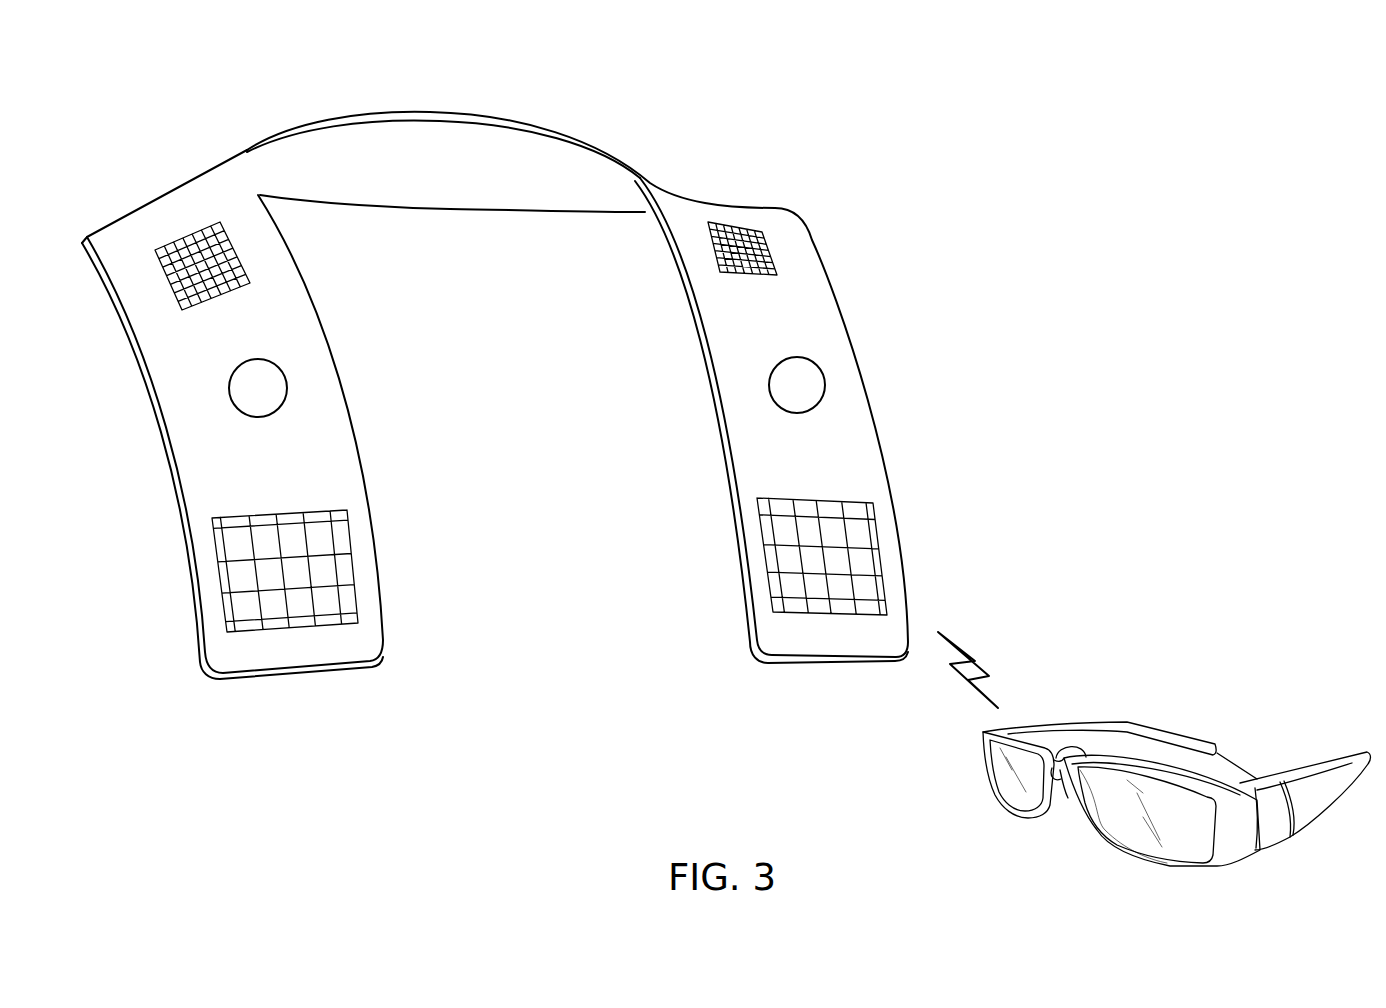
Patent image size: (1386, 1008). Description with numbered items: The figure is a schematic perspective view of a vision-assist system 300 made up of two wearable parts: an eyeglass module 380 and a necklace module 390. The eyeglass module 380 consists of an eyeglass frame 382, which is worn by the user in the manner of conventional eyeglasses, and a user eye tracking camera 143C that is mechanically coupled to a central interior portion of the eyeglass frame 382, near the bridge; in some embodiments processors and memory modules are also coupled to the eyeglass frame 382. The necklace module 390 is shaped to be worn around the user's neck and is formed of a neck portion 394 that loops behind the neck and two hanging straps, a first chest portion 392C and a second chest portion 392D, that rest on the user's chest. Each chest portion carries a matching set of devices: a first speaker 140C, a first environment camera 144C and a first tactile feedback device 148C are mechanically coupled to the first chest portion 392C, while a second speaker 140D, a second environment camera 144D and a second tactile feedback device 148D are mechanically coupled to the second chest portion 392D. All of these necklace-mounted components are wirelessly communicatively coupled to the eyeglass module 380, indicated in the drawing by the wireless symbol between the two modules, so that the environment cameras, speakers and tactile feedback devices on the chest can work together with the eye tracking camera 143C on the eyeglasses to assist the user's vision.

The vision-assist system 300 is at (1096, 306).
The necklace module 390 is at (505, 369).
The neck portion 394 is at (404, 112).
The first chest portion 392C is at (180, 437).
The second chest portion 392D is at (808, 308).
The first speaker 140C is at (165, 283).
The second speaker 140D is at (742, 222).
The first environment camera 144C is at (260, 368).
The second environment camera 144D is at (783, 372).
The first tactile feedback device 148C is at (220, 573).
The second tactile feedback device 148D is at (886, 553).
The eyeglass module 380 is at (1177, 742).
The eyeglass frame 382 is at (1225, 783).
The user eye tracking camera 143C is at (1073, 748).